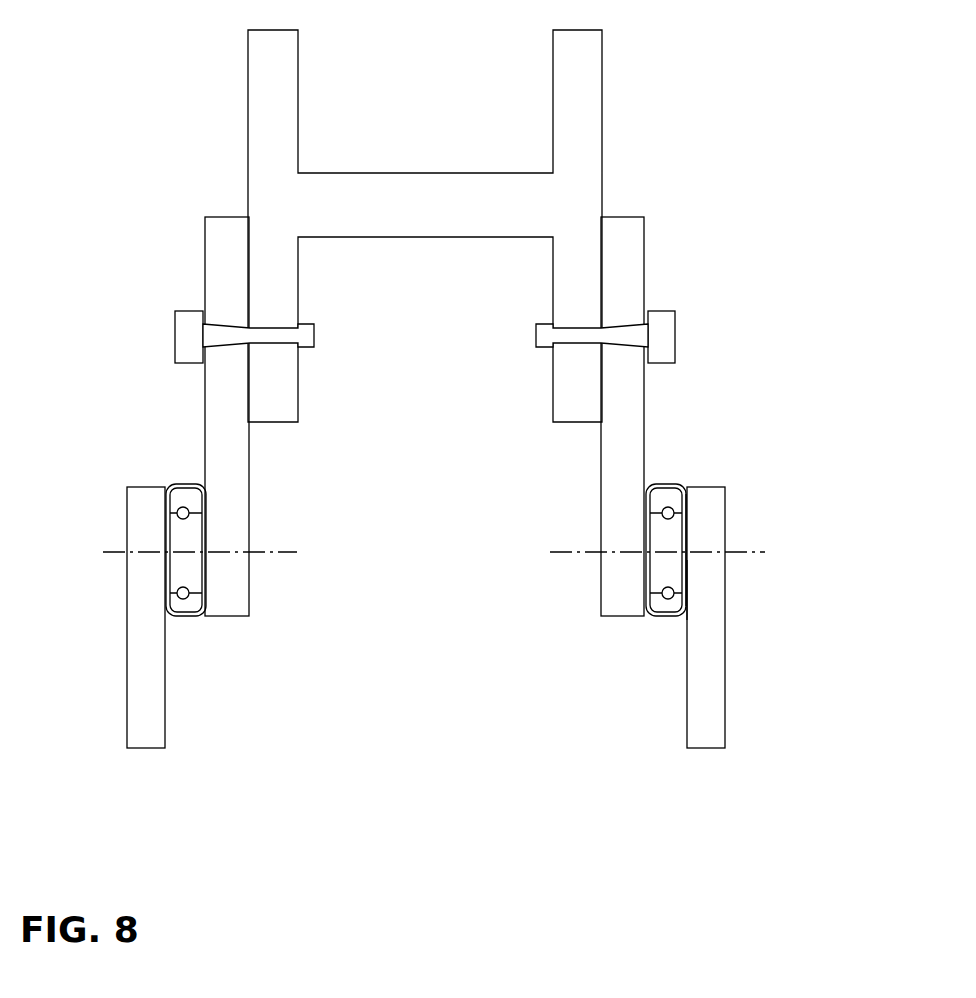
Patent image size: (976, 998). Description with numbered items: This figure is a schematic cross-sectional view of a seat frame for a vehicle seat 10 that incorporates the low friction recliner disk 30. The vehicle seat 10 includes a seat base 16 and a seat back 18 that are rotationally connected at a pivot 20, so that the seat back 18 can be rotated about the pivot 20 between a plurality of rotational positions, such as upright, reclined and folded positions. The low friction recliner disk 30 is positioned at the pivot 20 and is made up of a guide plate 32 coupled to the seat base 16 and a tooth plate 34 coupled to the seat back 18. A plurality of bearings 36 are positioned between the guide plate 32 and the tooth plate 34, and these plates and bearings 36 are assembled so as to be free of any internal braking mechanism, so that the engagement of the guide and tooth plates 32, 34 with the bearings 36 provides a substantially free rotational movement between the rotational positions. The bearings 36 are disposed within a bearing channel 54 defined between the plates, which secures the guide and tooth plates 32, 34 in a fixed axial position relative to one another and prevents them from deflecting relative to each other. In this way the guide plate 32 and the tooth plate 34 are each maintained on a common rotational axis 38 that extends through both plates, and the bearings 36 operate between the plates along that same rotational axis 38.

The vehicle seat 10 is at (143, 88).
The seat base 16 is at (731, 688).
The seat back 18 is at (610, 126).
The pivot 20 is at (694, 576).
The low friction recliner disk 30 is at (632, 505).
The guide plate 32 is at (657, 470).
The tooth plate 34 is at (678, 533).
The bearings 36 is at (670, 508).
The common rotational axis 38 is at (575, 553).
The bearing channel 54 is at (692, 599).